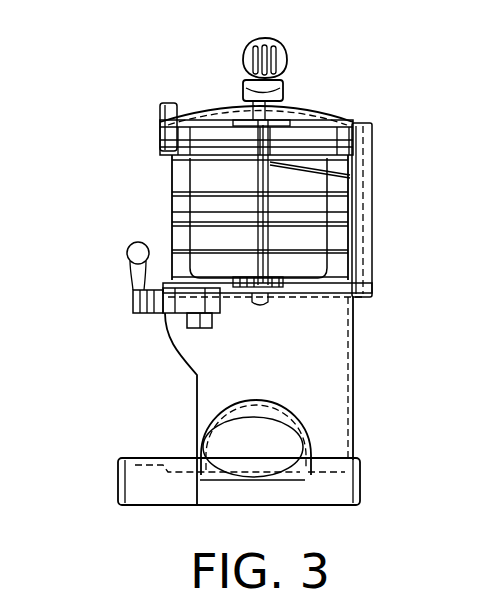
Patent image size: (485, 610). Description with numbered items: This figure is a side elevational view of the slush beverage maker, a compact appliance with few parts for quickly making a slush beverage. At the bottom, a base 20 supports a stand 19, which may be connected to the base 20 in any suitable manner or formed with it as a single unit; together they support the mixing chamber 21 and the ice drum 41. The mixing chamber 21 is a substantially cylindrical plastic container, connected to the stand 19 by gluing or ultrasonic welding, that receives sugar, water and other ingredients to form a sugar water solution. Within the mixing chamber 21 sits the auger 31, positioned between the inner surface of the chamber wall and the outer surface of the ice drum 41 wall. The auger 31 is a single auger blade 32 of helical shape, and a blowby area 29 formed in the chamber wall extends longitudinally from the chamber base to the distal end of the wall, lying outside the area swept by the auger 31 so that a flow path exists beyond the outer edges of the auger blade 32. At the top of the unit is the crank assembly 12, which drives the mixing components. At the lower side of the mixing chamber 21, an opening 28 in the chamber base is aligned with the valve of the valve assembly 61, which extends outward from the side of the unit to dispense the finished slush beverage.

The crank assembly 12 is at (243, 36).
The stand 19 is at (197, 373).
The base 20 is at (120, 480).
The mixing chamber 21 is at (162, 192).
The opening 28 is at (220, 313).
The blowby area 29 is at (371, 168).
The auger 31 is at (172, 226).
The auger blade 32 is at (167, 180).
The ice drum 41 is at (160, 212).
The valve assembly 61 is at (118, 268).